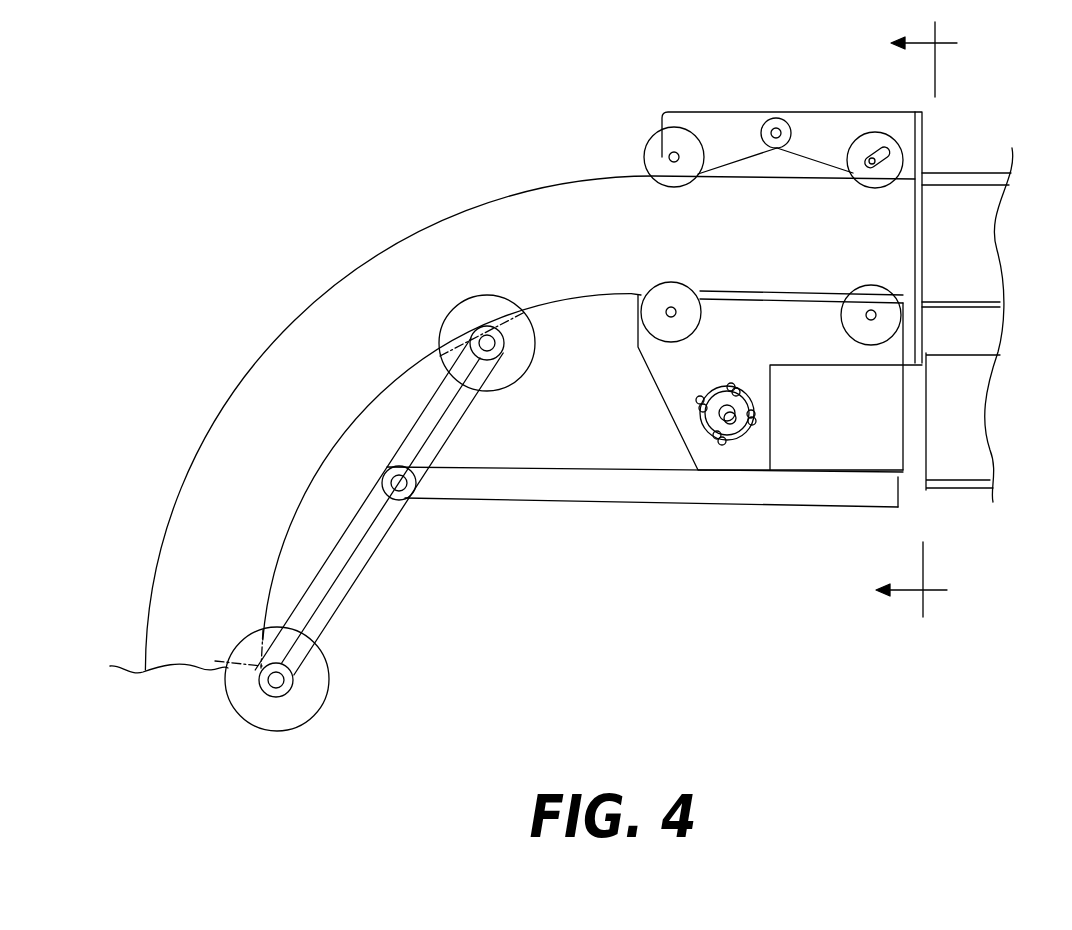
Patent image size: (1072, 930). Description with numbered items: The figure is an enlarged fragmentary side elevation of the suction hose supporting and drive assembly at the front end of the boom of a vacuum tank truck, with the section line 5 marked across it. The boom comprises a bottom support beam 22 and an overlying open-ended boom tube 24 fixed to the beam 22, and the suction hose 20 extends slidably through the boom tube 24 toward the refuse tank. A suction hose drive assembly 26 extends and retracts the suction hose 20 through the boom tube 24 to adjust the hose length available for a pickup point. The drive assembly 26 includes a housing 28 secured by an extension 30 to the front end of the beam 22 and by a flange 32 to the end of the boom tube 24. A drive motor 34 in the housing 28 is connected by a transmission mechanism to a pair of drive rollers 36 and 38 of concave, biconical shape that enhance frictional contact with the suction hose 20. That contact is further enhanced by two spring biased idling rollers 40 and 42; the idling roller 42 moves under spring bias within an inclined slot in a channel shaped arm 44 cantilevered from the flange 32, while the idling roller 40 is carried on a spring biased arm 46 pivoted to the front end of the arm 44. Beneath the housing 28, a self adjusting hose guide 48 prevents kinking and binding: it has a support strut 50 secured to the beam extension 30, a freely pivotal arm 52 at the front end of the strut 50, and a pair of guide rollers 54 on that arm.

The section line 5- 5 is at (916, 317).
The suction hose 20 is at (333, 316).
The bottom support beam 22 is at (965, 455).
The boom tube 24 is at (973, 174).
The suction hose drive assembly 26 is at (785, 95).
The housing 28 is at (752, 457).
The extension 30 is at (911, 465).
The flange 32 is at (931, 120).
The drive motor 34 is at (698, 428).
The drive roller 36 is at (679, 335).
The drive roller 38 is at (850, 317).
The idling roller 40 is at (672, 186).
The idling roller 42 is at (861, 182).
The channel shaped arm 44 is at (825, 146).
The spring biased arm 46 is at (722, 123).
The self adjusting hose guide 48 is at (424, 529).
The support strut 50 is at (558, 492).
The freely pivotal arm 52 is at (362, 568).
The guide rollers 54 is at (508, 367).